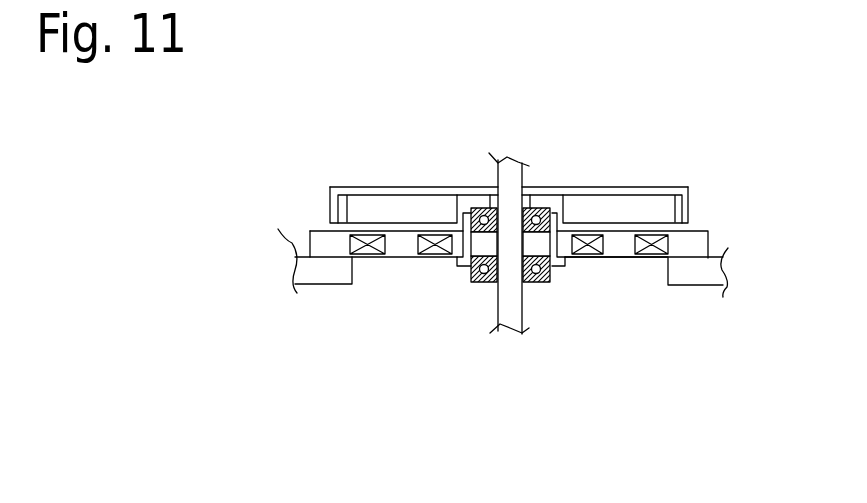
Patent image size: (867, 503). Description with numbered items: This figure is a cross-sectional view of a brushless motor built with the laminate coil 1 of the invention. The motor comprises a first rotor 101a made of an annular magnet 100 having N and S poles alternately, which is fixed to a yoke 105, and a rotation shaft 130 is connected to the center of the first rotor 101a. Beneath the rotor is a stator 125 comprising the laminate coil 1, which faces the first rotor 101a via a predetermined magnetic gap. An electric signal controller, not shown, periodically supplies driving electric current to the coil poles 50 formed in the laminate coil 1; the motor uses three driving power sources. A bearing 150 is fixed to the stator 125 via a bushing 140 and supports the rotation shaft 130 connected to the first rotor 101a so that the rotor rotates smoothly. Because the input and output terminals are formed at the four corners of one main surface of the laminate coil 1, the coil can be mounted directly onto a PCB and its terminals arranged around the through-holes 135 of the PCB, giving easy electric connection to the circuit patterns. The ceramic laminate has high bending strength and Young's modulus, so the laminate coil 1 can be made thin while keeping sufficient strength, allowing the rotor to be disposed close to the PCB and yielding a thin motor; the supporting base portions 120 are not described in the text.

The laminate coil 1 is at (690, 238).
The coil poles 50 is at (625, 250).
The annular magnet 100 is at (501, 158).
The first rotor 101a is at (587, 187).
The yoke 105 is at (397, 185).
The base 120 is at (337, 268).
The stator 125 is at (322, 238).
The rotation shaft 130 is at (503, 172).
The through-holes 135 is at (590, 270).
The bushing 140 is at (463, 268).
The bearing 150 is at (472, 207).